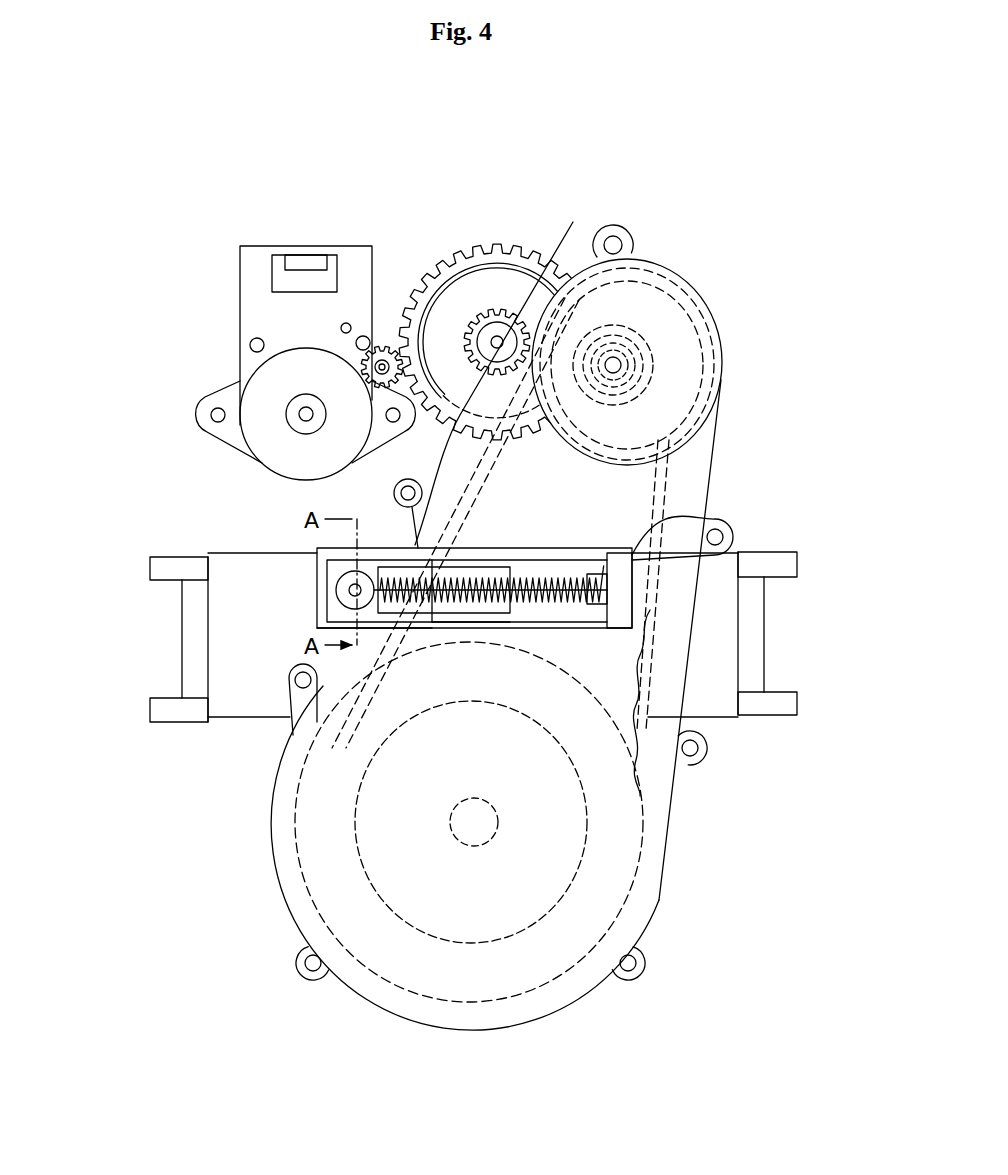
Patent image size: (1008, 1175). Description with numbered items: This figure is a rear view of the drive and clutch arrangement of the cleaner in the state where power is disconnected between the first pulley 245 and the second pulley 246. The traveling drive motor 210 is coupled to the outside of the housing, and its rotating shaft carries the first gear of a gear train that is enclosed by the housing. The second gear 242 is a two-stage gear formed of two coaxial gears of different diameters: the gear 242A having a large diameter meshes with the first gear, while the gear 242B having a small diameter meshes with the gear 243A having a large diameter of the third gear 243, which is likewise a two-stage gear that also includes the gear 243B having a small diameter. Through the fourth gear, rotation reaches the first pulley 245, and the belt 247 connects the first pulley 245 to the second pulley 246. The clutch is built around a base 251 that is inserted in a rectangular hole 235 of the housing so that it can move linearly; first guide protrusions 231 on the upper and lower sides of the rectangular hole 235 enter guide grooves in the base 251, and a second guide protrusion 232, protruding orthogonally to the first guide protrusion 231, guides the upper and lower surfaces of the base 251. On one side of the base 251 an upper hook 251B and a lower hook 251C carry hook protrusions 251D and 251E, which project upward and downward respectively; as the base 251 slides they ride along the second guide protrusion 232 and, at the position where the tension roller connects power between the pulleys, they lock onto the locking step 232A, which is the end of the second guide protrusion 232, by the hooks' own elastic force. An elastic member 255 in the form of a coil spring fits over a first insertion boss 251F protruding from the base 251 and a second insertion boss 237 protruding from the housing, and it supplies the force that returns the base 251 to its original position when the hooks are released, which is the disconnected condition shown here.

The traveling drive motor 210 is at (278, 434).
The first guide protrusion 231 is at (490, 565).
The second guide protrusion 232 is at (515, 570).
The locking step 232A is at (515, 565).
The rectangular hole 235 is at (727, 550).
The second insertion boss 237 is at (632, 583).
The second gear 242 is at (478, 282).
The large-diameter gear of the second gear 242A is at (383, 300).
The small-diameter gear of the second gear 242B is at (438, 248).
The third gear 243 is at (531, 316).
The large-diameter gear of the third gear 243A is at (504, 308).
The small-diameter gear of the third gear 243B is at (573, 222).
The first pulley 245 is at (672, 333).
The second pulley 246 is at (605, 885).
The belt 247 is at (700, 717).
The base 251 is at (327, 590).
The upper hook 251B is at (385, 548).
The lower hook 251C is at (297, 673).
The hook protrusion of the upper hook 251D is at (411, 481).
The hook protrusion of the lower hook 251E is at (395, 625).
The first insertion boss 251F is at (340, 633).
The elastic member 255 is at (690, 622).